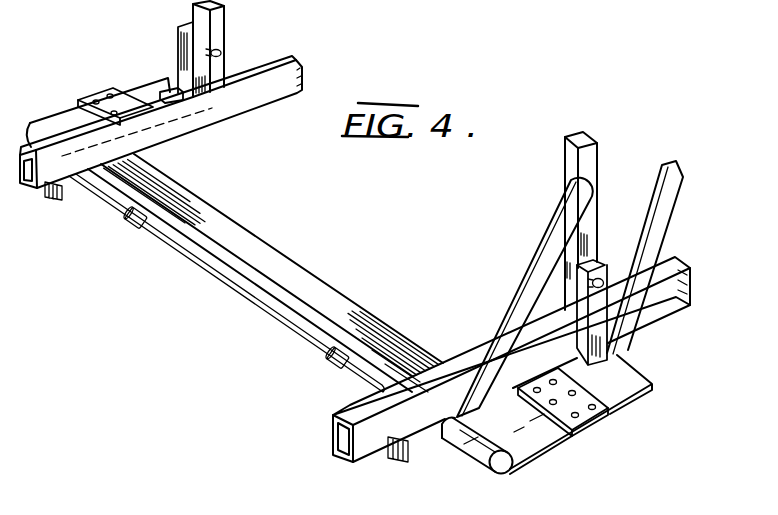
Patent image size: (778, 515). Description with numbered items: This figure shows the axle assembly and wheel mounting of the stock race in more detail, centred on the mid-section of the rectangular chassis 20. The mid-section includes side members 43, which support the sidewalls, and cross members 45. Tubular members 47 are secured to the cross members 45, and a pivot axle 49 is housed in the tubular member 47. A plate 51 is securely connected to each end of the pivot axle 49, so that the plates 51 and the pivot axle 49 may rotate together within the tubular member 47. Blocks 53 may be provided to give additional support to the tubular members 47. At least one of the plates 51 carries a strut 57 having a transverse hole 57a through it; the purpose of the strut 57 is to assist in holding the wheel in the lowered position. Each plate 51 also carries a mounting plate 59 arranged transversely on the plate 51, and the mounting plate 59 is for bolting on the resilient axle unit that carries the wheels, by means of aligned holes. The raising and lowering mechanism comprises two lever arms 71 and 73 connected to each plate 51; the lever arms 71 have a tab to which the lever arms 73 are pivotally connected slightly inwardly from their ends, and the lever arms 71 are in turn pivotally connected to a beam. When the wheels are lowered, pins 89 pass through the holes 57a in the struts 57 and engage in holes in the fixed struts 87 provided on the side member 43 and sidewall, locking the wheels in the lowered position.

The rectangular chassis 20 is at (387, 397).
The side member 43 is at (293, 62).
The cross member 45 is at (247, 236).
The tubular member 47 is at (140, 217).
The pivot axle 49 is at (243, 288).
The plate 51 is at (63, 118).
The block 53 is at (63, 188).
The strut 57 is at (187, 33).
The transverse hole 57a is at (200, 50).
The mounting plate 59 is at (102, 90).
The lever arm 71 is at (553, 227).
The lever arm 73 is at (660, 187).
The fixed strut 87 is at (220, 22).
The pin 89 is at (603, 288).